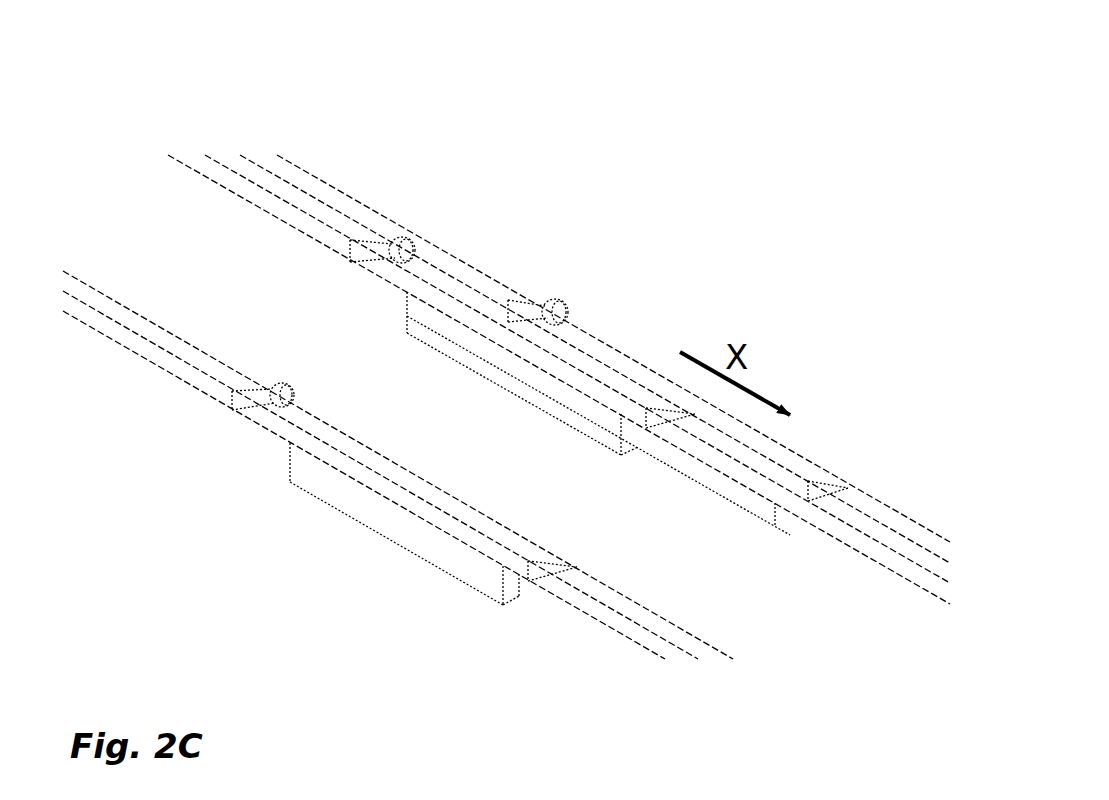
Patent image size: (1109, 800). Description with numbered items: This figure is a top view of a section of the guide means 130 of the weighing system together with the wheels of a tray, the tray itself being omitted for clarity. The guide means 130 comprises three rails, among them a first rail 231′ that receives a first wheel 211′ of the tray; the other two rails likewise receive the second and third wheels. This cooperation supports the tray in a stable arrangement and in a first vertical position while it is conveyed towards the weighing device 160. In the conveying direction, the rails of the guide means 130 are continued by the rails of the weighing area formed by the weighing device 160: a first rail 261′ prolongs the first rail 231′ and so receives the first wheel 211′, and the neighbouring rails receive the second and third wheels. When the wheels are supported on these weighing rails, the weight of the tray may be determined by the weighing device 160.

The guide means 130 is at (293, 236).
The weighing device 160 is at (465, 364).
The first rail 231′ is at (190, 352).
The first wheel 211′ is at (278, 403).
The first rail of the weighing area 261′ is at (460, 507).